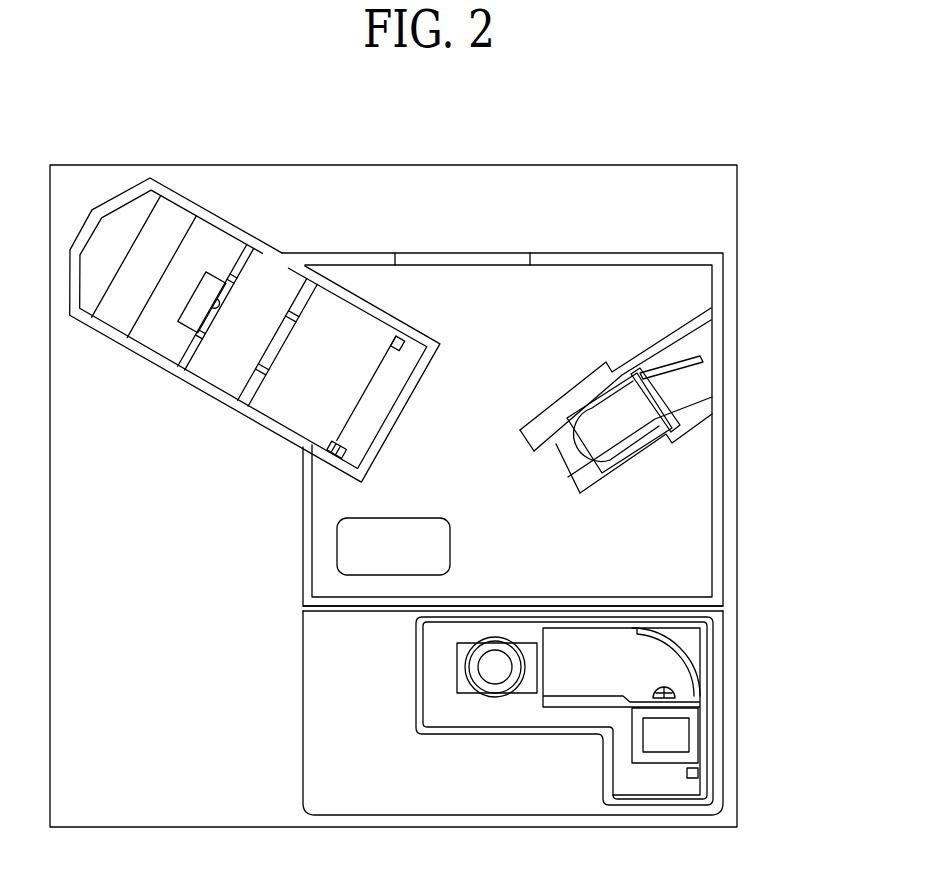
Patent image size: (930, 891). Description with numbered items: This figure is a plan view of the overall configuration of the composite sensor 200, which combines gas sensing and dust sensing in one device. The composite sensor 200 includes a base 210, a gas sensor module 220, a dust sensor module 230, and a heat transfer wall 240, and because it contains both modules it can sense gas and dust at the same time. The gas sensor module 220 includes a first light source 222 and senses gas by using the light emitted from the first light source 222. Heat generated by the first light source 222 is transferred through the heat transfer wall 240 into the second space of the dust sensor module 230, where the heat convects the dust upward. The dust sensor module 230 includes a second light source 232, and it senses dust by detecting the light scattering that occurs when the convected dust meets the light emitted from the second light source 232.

The composite sensor 200 is at (618, 133).
The base 210 is at (463, 795).
The gas sensor module 220 is at (658, 807).
The first light source 222 is at (665, 697).
The dust sensor module 230 is at (690, 518).
The second light source 232 is at (657, 395).
The heat transfer wall 240 is at (688, 604).